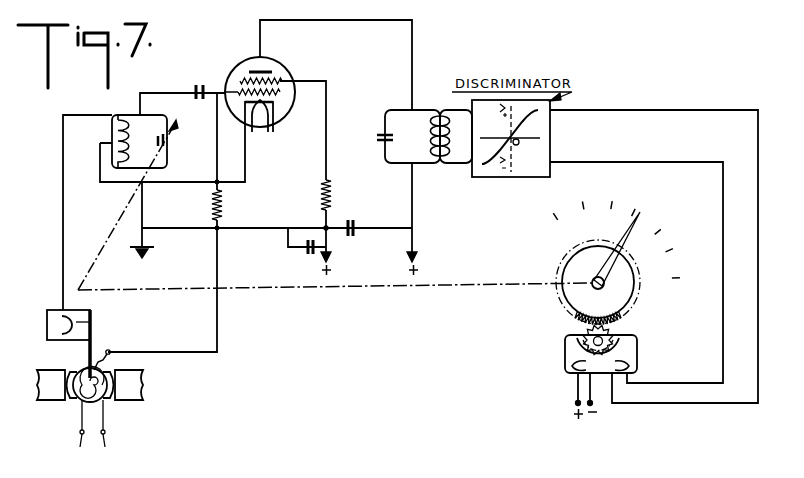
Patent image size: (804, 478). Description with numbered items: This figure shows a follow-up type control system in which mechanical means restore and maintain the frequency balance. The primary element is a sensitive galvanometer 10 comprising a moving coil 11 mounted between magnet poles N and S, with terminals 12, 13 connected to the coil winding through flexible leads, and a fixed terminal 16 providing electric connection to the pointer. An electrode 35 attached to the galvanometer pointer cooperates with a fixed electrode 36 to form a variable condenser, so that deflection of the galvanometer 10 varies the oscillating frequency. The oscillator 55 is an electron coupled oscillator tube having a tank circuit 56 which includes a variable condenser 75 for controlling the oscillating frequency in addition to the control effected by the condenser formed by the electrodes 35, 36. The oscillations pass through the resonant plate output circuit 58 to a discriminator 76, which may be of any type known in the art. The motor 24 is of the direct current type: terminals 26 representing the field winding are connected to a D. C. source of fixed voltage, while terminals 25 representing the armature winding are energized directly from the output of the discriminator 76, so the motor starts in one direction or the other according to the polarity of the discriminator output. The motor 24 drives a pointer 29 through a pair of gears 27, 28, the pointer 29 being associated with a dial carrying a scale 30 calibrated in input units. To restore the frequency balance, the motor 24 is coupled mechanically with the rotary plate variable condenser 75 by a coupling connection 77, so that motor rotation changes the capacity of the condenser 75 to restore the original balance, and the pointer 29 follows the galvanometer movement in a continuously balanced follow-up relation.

The galvanometer 10 is at (76, 368).
The moving coil 11 is at (76, 400).
The terminal 12 is at (79, 433).
The terminal 13 is at (106, 433).
The fixed terminal 16 is at (108, 349).
The motor 24 is at (637, 350).
The armature winding terminals 25 is at (636, 362).
The field winding terminals 26 is at (568, 362).
The gear 27 is at (612, 332).
The gear 28 is at (623, 318).
The pointer 29 is at (636, 226).
The scale 30 is at (615, 208).
The electrode 35 is at (47, 326).
The fixed electrode 36 is at (80, 322).
The oscillator 55 is at (283, 72).
The tank circuit 56 is at (139, 141).
The resonant plate output circuit 58 is at (424, 136).
The variable condenser 75 is at (171, 144).
The discriminator 76 is at (550, 150).
The coupling connection 77 is at (435, 286).